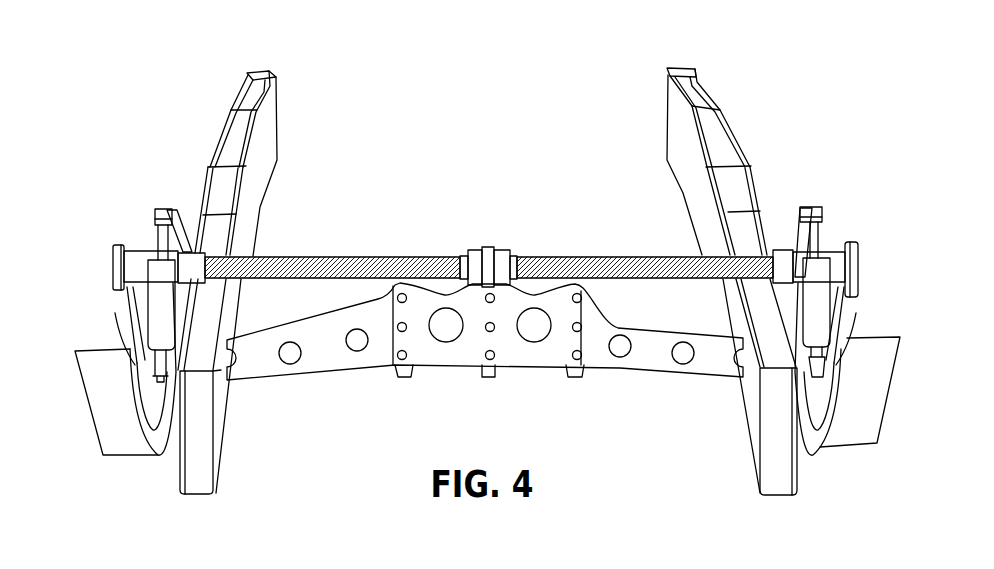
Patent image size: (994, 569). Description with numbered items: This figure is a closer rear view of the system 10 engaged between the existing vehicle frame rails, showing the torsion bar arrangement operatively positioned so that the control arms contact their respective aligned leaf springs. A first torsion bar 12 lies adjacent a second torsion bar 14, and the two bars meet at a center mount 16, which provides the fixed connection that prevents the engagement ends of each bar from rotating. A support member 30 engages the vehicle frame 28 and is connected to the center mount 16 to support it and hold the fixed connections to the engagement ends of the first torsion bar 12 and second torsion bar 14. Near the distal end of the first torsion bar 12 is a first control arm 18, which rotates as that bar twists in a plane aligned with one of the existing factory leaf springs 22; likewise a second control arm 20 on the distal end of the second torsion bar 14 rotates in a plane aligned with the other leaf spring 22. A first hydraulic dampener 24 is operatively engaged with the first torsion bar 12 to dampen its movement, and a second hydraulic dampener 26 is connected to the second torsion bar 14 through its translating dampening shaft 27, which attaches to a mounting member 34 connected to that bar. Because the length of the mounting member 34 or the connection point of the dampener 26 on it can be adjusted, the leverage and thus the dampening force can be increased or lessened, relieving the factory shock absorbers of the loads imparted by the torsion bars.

The system 10 is at (421, 134).
The first torsion bar 12 is at (272, 257).
The second torsion bar 14 is at (638, 257).
The center mount 16 is at (489, 248).
The first control arm 18 is at (117, 312).
The second control arm 20 is at (857, 300).
The leaf spring 22 is at (90, 356).
The first hydraulic dampener 24 is at (158, 272).
The second hydraulic dampener 26 is at (823, 250).
The translating dampening shaft 27 is at (163, 246).
The frame 28 is at (262, 73).
The support member 30 is at (318, 382).
The mounting member 34 is at (180, 215).